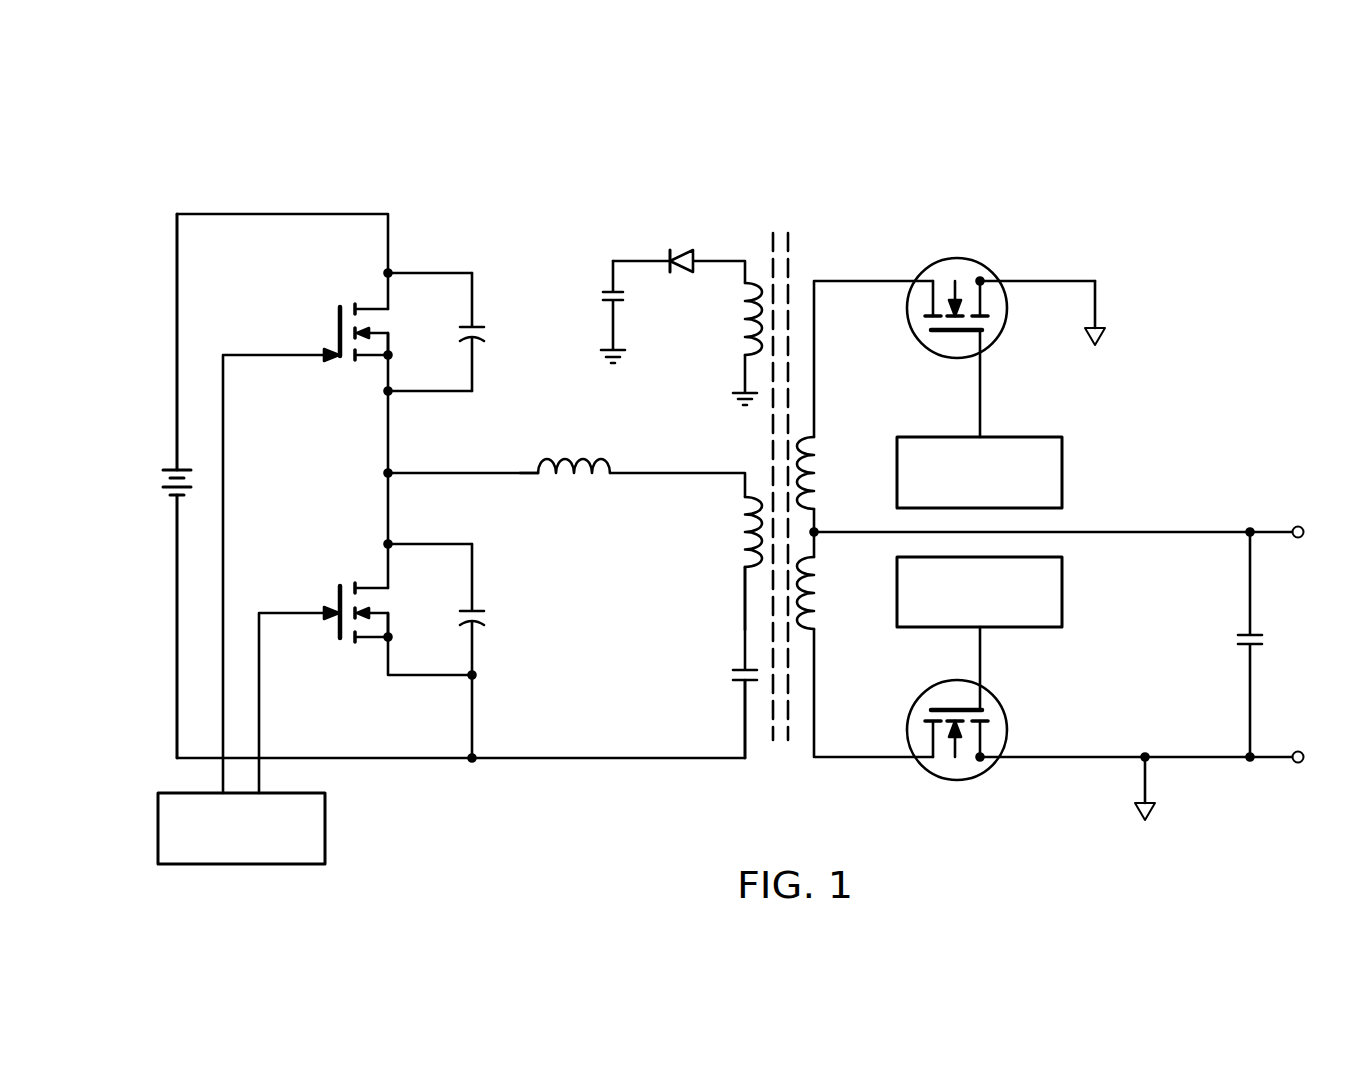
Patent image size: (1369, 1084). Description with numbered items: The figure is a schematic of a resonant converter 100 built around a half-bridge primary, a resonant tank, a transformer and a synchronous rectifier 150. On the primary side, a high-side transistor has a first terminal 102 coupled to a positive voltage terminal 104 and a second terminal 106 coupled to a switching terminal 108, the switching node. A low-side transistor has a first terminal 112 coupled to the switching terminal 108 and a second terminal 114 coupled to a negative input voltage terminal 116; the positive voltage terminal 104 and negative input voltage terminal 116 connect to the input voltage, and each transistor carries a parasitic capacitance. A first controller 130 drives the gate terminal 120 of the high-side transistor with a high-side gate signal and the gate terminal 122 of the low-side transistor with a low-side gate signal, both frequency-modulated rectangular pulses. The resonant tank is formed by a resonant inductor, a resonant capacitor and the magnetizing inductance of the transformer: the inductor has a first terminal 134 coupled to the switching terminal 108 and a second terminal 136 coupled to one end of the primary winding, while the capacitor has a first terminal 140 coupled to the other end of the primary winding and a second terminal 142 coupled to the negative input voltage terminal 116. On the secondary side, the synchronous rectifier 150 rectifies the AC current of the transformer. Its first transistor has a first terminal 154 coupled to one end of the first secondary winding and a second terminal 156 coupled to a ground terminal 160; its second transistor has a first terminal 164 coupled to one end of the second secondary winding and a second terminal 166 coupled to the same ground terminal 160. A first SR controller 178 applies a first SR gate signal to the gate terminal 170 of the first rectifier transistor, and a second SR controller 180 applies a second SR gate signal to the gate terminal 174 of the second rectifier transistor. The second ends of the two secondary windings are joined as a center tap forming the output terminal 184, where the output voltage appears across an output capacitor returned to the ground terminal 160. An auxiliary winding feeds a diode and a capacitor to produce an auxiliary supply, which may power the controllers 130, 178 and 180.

The resonant converter 100 is at (1306, 151).
The first terminal of high-side transistor 102 is at (388, 213).
The positive voltage terminal 104 is at (177, 302).
The second terminal of high-side transistor 106 is at (392, 394).
The switching terminal 108 is at (463, 477).
The first terminal of low-side transistor 112 is at (388, 570).
The second terminal of low-side transistor 114 is at (472, 716).
The negative input voltage terminal 116 is at (177, 658).
The gate terminal of high-side transistor 120 is at (334, 358).
The gate terminal of low-side transistor 122 is at (334, 616).
The first controller 130 is at (325, 830).
The first terminal of inductor Lr 134 is at (538, 477).
The second terminal of inductor Lr 136 is at (613, 470).
The first terminal of capacitor Cr 140 is at (745, 611).
The second terminal of capacitor Cr 142 is at (745, 716).
The synchronous rectifier 150 is at (1176, 418).
The first terminal of transistor MSR1 154 is at (860, 281).
The second terminal of transistor MSR1 156 is at (1037, 281).
The ground terminal 160 is at (1097, 312).
The first terminal of transistor MSR2 164 is at (858, 760).
The second terminal of transistor MSR2 166 is at (1050, 757).
The gate terminal of transistor MSR1 170 is at (981, 376).
The gate terminal of transistor MSR2 174 is at (981, 665).
The first synchronous rectifier controller 178 is at (1064, 472).
The second synchronous rectifier controller 180 is at (1064, 600).
The output terminal 184 is at (1278, 531).